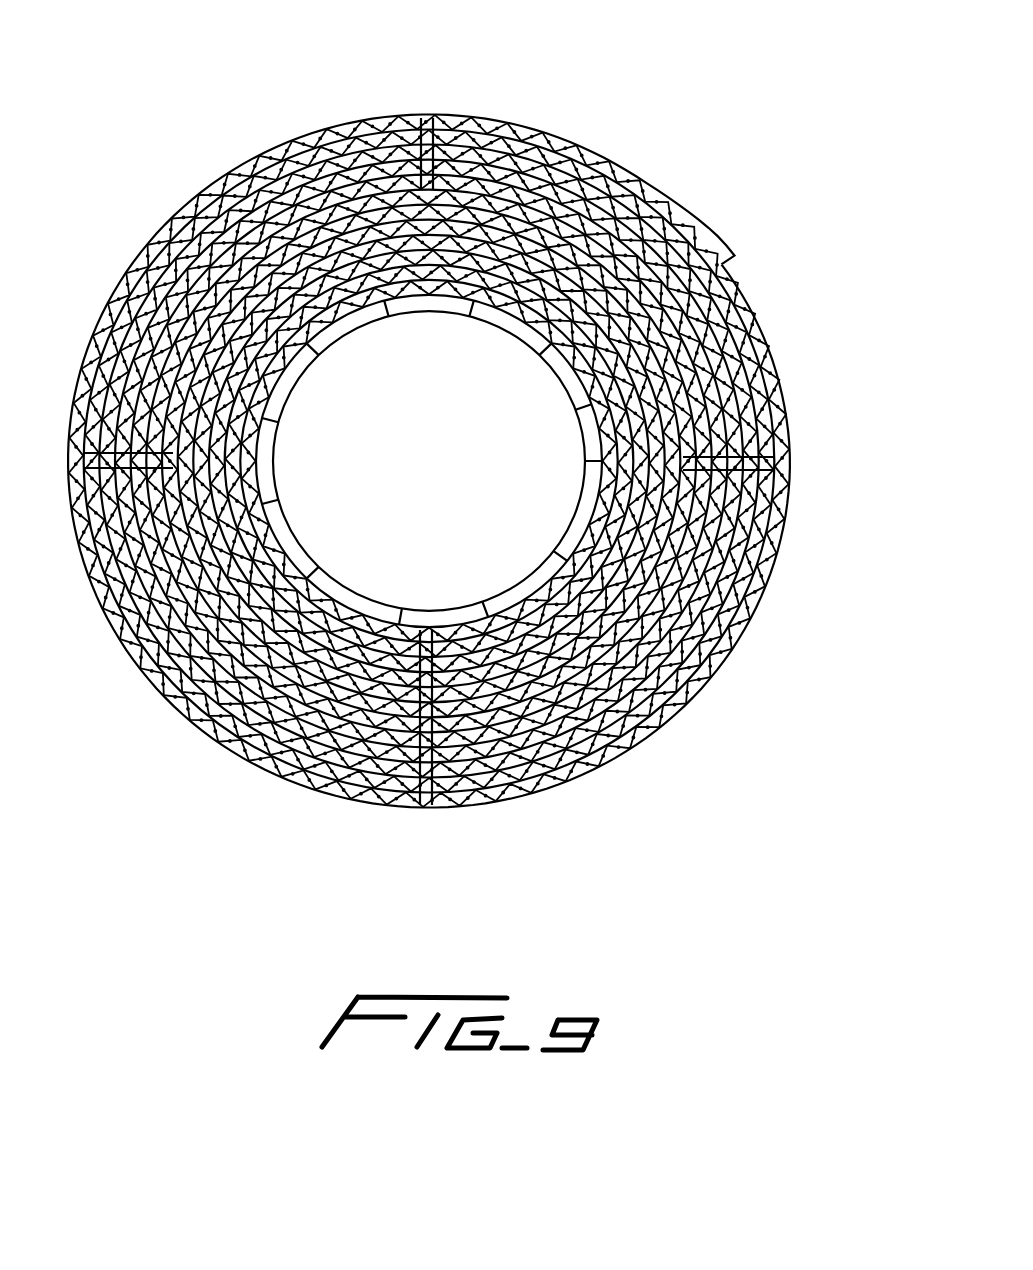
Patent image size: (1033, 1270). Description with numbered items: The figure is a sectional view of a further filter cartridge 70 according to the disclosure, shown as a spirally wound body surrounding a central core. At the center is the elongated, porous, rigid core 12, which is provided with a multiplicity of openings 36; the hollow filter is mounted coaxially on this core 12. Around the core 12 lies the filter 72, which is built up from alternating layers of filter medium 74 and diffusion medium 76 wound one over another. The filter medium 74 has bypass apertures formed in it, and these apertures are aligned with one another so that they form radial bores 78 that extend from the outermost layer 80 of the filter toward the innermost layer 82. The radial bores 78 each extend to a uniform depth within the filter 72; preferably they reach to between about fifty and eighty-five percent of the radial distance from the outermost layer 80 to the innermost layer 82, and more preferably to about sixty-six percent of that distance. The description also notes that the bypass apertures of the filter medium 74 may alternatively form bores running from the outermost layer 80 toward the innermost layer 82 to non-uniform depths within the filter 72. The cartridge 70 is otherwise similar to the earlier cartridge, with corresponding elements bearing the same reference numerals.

The core 12 is at (363, 315).
The openings 36 is at (427, 610).
The filter cartridge 70 is at (749, 163).
The filter 72 is at (793, 395).
The filter medium 74 is at (765, 493).
The diffusion medium 76 is at (203, 197).
The radial bores 78 is at (380, 128).
The outermost layer 80 is at (690, 697).
The innermost layer 82 is at (586, 417).